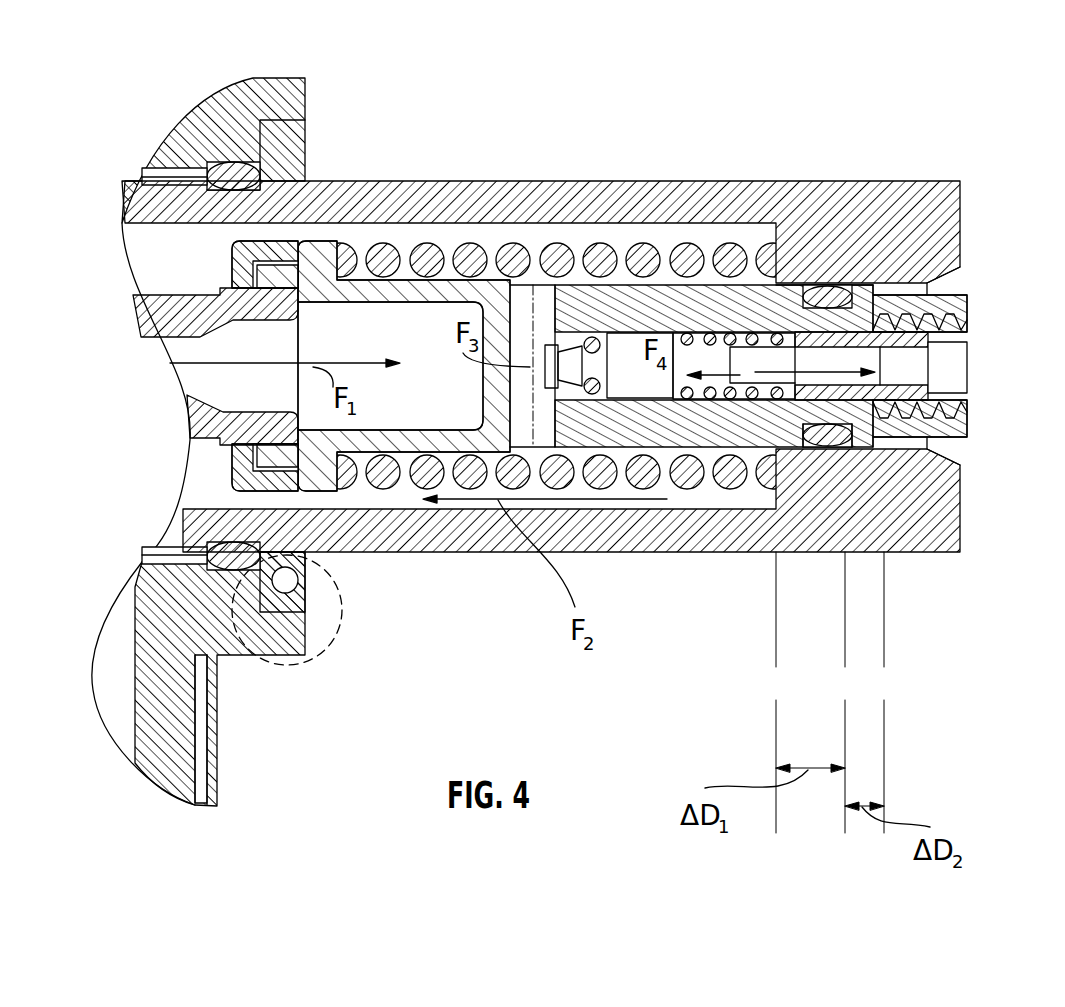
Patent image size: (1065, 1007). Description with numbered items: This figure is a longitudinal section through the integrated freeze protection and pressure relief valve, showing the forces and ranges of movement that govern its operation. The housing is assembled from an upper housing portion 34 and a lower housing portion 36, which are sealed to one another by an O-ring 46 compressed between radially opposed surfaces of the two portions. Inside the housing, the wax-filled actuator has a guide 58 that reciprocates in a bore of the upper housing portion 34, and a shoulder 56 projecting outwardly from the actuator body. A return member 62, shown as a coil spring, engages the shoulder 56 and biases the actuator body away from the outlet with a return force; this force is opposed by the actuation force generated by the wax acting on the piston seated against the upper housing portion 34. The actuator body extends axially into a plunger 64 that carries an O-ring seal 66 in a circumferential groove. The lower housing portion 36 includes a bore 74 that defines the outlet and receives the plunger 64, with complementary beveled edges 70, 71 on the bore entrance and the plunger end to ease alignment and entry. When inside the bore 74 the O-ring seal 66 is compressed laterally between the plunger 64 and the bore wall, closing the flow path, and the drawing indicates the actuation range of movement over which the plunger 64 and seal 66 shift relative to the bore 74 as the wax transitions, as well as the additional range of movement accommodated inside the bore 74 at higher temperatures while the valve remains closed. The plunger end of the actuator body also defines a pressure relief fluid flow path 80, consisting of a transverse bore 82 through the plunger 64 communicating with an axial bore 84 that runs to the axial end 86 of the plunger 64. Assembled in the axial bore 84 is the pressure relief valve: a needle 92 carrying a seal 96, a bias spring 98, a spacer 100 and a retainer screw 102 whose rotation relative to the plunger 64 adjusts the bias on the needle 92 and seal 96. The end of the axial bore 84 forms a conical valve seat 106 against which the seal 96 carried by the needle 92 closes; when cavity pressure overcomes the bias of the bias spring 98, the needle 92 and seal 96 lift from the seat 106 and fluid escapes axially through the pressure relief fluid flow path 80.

The upper housing portion 34 is at (260, 103).
The lower housing portion 36 is at (707, 181).
The O-ring 46 is at (227, 167).
The shoulder 56 is at (330, 253).
The guide 58 is at (160, 310).
The return member 62 is at (425, 252).
The plunger 64 is at (620, 307).
The O-ring seal 66 is at (827, 450).
The beveled edge 70 is at (802, 287).
The beveled edge 71 is at (880, 293).
The bore 74 is at (890, 295).
The pressure relief fluid flow path 80 is at (790, 347).
The transverse bore 82 is at (543, 447).
The axial bore 84 is at (700, 405).
The axial end of the plunger 86 is at (967, 310).
The needle 92 is at (641, 385).
The seal 96 is at (593, 398).
The bias spring 98 is at (687, 303).
The spacer 100 is at (963, 433).
The retainer screw 102 is at (950, 397).
The conical valve seat 106 is at (578, 320).